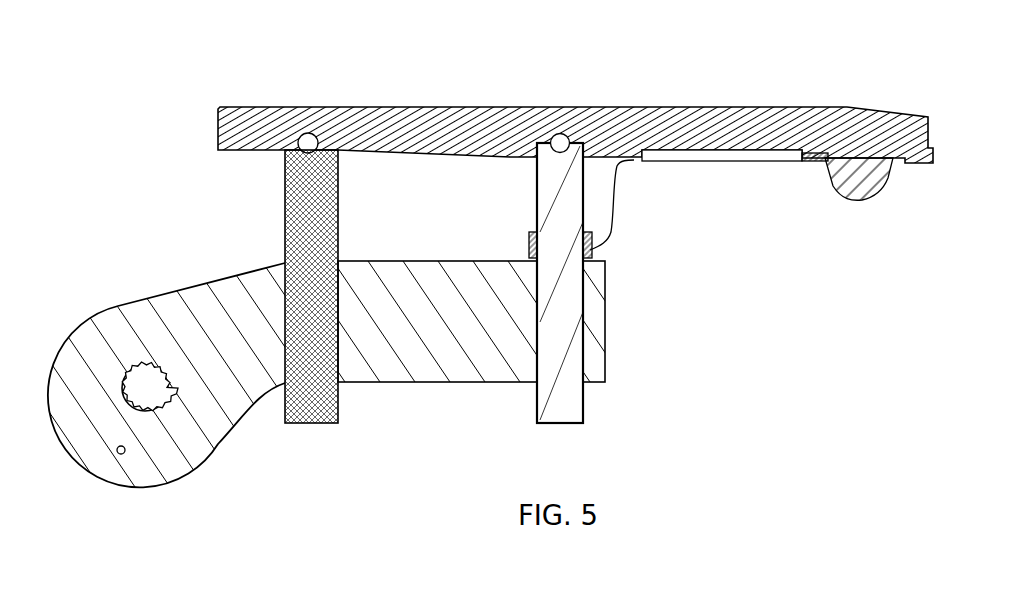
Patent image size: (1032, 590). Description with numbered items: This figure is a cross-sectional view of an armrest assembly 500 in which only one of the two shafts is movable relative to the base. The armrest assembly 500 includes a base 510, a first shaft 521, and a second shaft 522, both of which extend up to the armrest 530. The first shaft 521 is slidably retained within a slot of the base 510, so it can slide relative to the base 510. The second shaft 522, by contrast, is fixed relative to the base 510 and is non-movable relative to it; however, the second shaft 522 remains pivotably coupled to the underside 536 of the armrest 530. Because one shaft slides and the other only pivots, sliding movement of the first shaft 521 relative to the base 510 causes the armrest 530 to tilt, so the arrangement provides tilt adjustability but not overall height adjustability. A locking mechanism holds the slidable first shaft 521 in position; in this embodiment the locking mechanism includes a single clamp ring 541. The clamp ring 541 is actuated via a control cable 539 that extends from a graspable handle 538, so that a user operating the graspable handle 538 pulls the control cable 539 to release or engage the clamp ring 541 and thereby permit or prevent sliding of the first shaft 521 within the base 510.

The armrest assembly 500 is at (70, 48).
The armrest 530 is at (230, 128).
The underside 536 is at (256, 152).
The control cable 539 is at (617, 162).
The graspable handle 538 is at (880, 188).
The second shaft 522 is at (318, 405).
The base 510 is at (420, 373).
The first shaft 521 is at (574, 405).
The clamp ring 541 is at (528, 243).